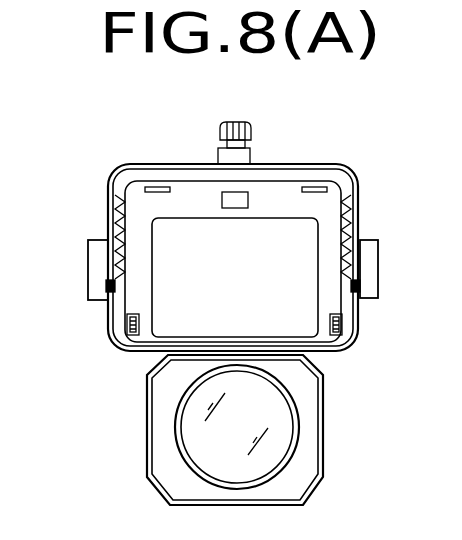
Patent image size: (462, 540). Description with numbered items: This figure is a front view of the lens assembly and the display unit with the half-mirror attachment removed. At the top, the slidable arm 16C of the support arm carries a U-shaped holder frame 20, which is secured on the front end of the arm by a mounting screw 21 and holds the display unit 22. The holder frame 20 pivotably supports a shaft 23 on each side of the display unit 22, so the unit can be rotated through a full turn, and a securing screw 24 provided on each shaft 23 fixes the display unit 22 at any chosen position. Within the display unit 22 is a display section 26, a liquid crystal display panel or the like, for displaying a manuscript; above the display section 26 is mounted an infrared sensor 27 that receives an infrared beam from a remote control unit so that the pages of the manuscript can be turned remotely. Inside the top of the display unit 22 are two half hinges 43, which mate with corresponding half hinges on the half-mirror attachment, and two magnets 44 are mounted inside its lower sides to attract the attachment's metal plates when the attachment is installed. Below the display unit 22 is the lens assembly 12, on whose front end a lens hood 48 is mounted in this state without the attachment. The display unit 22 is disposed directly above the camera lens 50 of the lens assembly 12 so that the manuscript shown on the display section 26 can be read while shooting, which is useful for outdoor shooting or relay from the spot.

The lens assembly 12 is at (124, 405).
The slidable arm 16C is at (217, 155).
The holder frame 20 is at (316, 164).
The mounting screw 21 is at (247, 124).
The display unit 22 is at (98, 209).
The shaft 23 is at (116, 287).
The securing screw 24 is at (88, 253).
The display section 26 is at (297, 322).
The infrared sensor 27 is at (222, 197).
The half hinge 43 is at (148, 194).
The magnet 44 is at (127, 330).
The lens hood 48 is at (325, 421).
The camera lens 50 is at (187, 436).